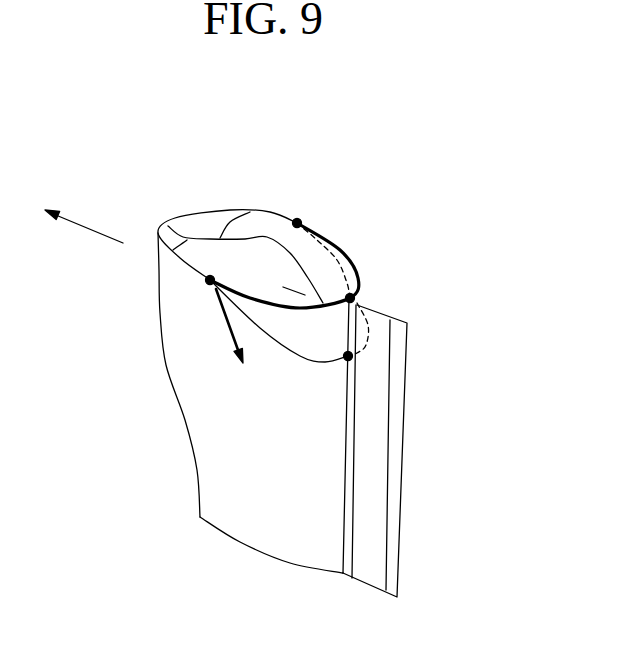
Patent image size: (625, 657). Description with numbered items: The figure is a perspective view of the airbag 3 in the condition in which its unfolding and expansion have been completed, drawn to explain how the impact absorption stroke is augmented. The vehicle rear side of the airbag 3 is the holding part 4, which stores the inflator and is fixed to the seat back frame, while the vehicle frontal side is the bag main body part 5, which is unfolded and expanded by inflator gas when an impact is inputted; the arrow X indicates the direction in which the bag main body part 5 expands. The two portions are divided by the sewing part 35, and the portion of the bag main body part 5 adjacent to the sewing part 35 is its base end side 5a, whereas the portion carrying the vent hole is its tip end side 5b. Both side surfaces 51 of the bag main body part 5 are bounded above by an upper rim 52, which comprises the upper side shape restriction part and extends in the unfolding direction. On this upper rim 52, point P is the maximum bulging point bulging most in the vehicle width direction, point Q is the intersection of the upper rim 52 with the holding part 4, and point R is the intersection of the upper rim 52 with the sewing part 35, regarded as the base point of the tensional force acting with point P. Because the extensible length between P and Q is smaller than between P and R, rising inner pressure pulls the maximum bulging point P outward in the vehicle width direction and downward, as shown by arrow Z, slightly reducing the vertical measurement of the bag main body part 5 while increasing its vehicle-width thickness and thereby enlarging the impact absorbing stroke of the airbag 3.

The airbag 3 is at (367, 227).
The holding part 4 is at (375, 505).
The bag main body part 5 is at (200, 517).
The base end side 5a is at (343, 450).
The tip end side 5b is at (160, 353).
The sewing part 35 is at (342, 528).
The side surfaces 51 is at (240, 413).
The upper rim 52 is at (190, 240).
The maximum bulging point P is at (297, 223).
The point Q is at (357, 297).
The point R is at (348, 356).
The arrow X is at (83, 222).
The arrow Z is at (237, 343).